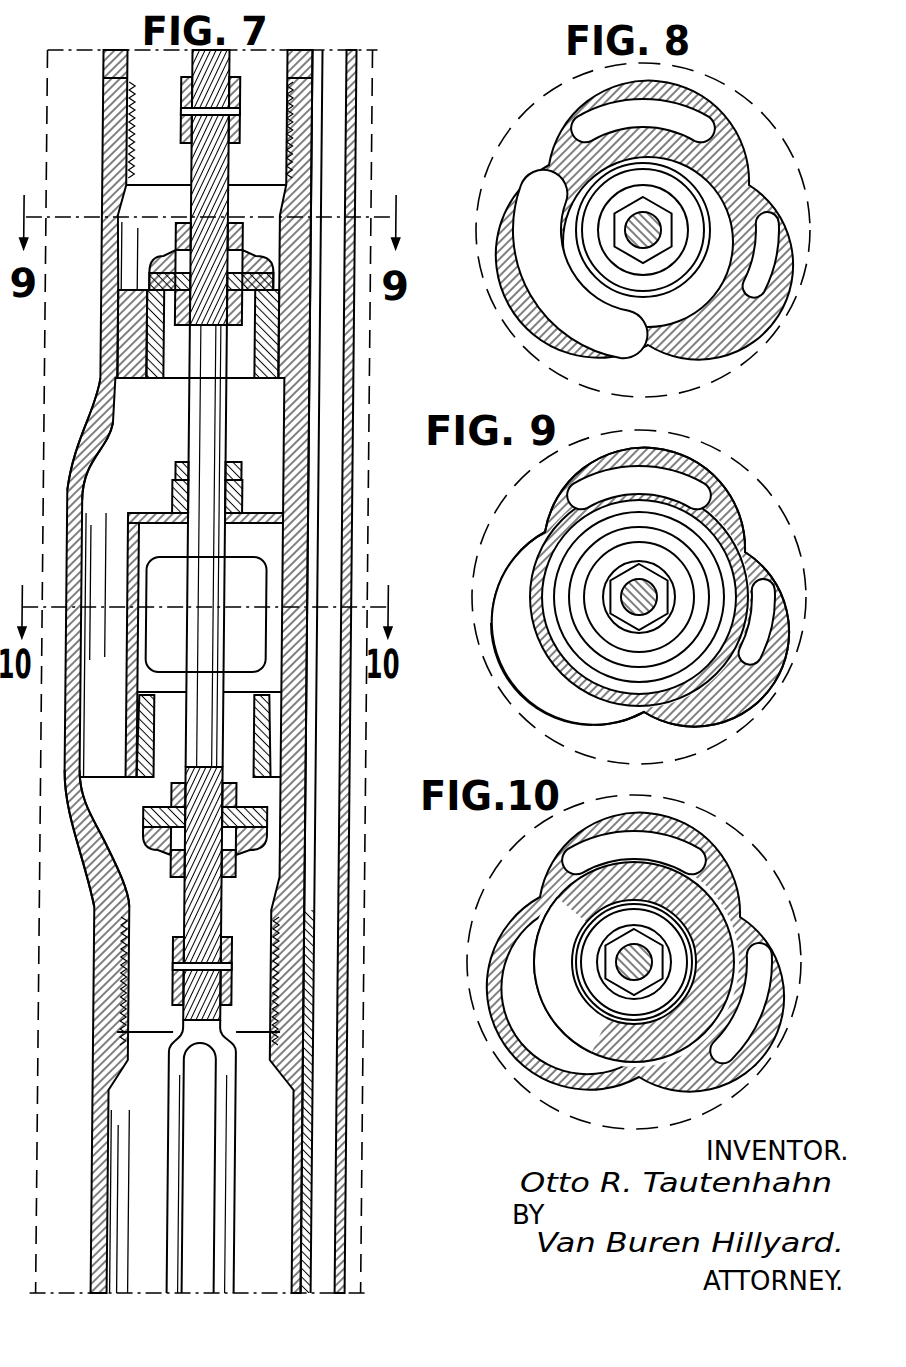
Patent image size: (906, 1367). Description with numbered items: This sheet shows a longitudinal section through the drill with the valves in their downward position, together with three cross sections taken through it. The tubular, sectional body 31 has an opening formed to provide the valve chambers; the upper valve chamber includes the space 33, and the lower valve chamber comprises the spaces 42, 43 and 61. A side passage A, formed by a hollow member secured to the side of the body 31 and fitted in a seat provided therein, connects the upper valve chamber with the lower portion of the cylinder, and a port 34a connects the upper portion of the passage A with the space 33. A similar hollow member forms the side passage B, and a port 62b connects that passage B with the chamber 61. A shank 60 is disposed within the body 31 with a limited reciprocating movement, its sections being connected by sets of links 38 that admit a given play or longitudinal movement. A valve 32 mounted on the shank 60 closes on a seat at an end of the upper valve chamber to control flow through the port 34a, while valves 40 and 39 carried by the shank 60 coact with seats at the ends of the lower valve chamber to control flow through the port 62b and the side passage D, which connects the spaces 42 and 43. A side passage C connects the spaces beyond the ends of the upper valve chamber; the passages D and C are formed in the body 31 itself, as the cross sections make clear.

In FIG. 7, the body 31 is at (98, 1108).
In FIG. 8, the body 31 is at (644, 235).
In FIG. 9, the body 31 is at (640, 603).
In FIG. 10, the body 31 is at (635, 952).
In FIG. 8, the valve 32 is at (684, 222).
In FIG. 8, the space 33 is at (704, 242).
In FIG. 8, the port 34a is at (679, 290).
In FIG. 7, the links 38 is at (226, 1167).
In FIG. 7, the valve 39 is at (252, 830).
In FIG. 10, the valve 39 is at (673, 949).
In FIG. 7, the valve 40 is at (243, 270).
In FIG. 9, the valve 40 is at (677, 596).
In FIG. 7, the space 42 is at (117, 428).
In FIG. 7, the space 43 is at (110, 835).
In FIG. 7, the shank 60 is at (201, 426).
In FIG. 8, the shank 60 is at (653, 255).
In FIG. 9, the shank 60 is at (634, 631).
In FIG. 10, the shank 60 is at (633, 931).
In FIG. 7, the chamber 61 is at (278, 545).
In FIG. 10, the chamber 61 is at (676, 950).
In FIG. 7, the port 62b is at (258, 578).
In FIG. 10, the port 62b is at (646, 897).
In FIG. 7, the side passage A is at (349, 84).
In FIG. 8, the side passage A is at (782, 272).
In FIG. 9, the side passage A is at (778, 639).
In FIG. 10, the side passage A is at (757, 1008).
In FIG. 8, the side passage B is at (671, 107).
In FIG. 9, the side passage B is at (662, 471).
In FIG. 10, the side passage B is at (658, 836).
In FIG. 8, the side passage C is at (559, 264).
In FIG. 7, the side passage D is at (112, 530).
In FIG. 9, the side passage D is at (523, 674).
In FIG. 10, the side passage D is at (559, 988).